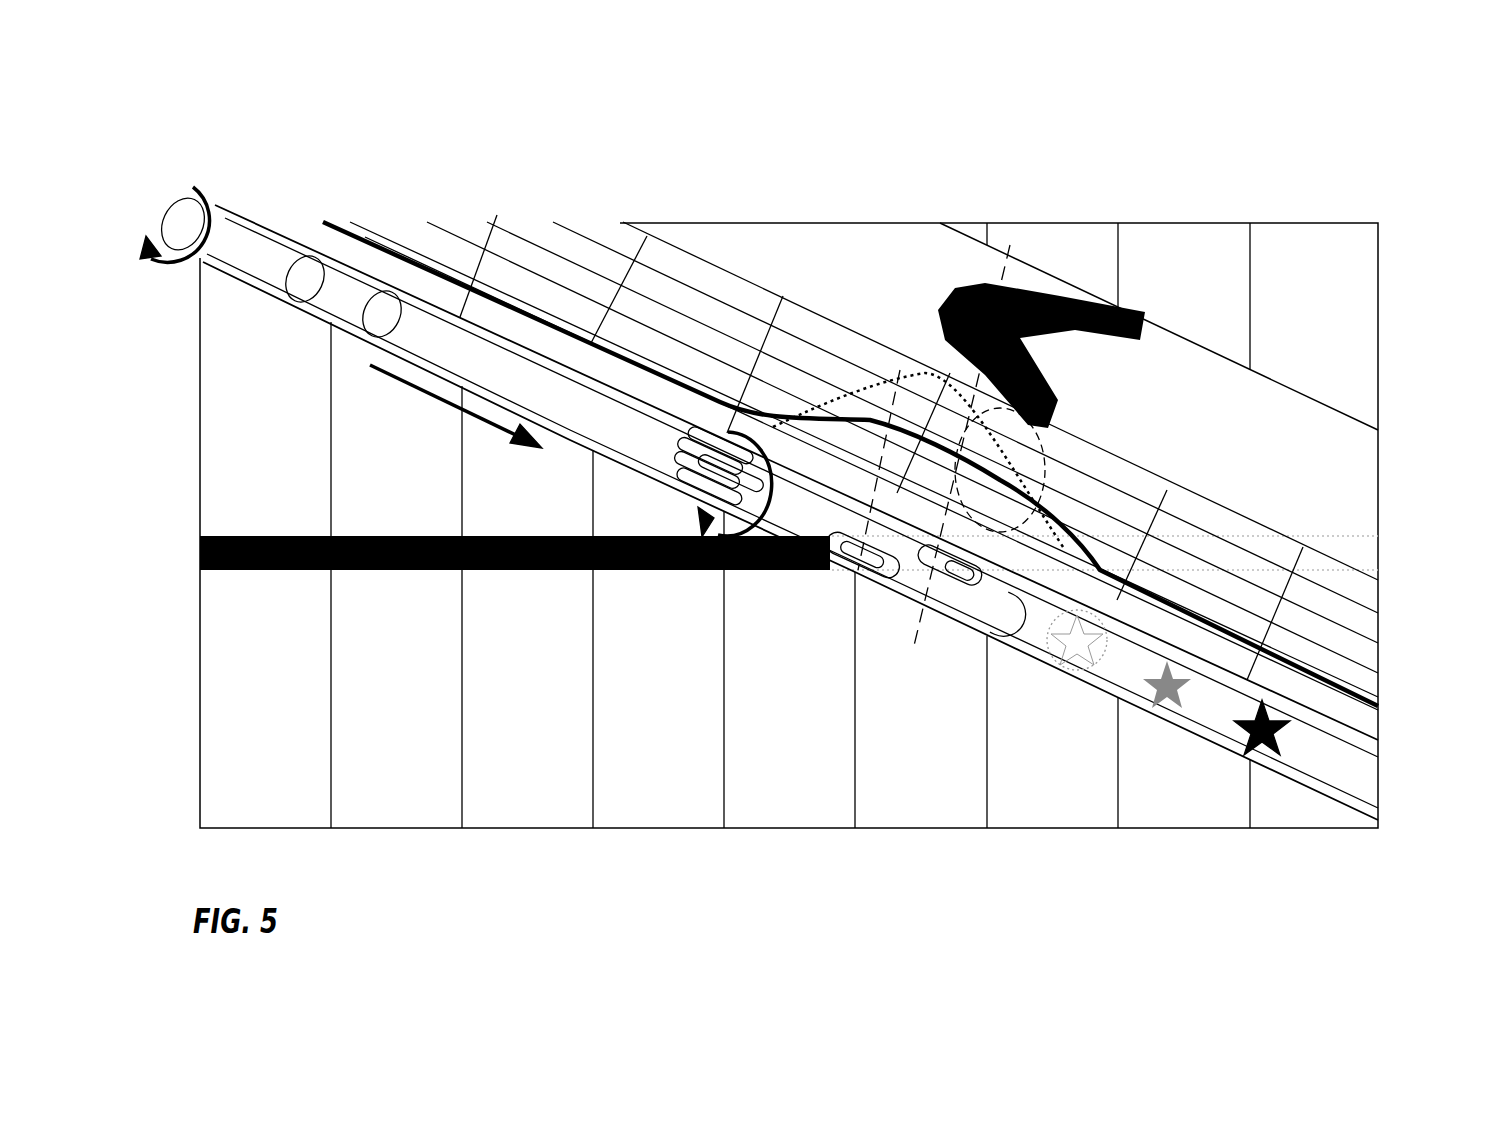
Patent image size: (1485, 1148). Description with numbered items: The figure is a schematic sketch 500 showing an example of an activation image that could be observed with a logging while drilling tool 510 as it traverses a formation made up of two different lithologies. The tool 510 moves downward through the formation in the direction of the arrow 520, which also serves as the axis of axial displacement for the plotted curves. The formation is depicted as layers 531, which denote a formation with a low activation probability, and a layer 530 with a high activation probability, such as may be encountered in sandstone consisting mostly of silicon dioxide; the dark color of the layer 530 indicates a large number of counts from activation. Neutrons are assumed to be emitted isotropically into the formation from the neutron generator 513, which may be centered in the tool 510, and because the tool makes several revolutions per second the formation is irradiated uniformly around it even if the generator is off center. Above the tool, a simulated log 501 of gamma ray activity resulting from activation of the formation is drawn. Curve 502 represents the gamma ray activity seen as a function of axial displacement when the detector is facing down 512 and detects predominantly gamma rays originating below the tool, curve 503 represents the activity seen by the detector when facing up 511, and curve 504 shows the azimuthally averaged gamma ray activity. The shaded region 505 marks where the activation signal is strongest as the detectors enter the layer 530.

The sketch 500 is at (1192, 130).
The simulated log of gamma ray activity 501 is at (583, 255).
The curve 502 is at (878, 390).
The curve 503 is at (1053, 458).
The curve 504 is at (1153, 519).
The dark plume region 505 is at (1057, 338).
The tool 510 is at (430, 338).
The detector facing up 511 is at (918, 730).
The detector facing down 512 is at (793, 710).
The neutron generator 513 is at (1262, 745).
The arrow 520 is at (320, 377).
The layer 530 is at (357, 570).
The layers 531 is at (225, 683).